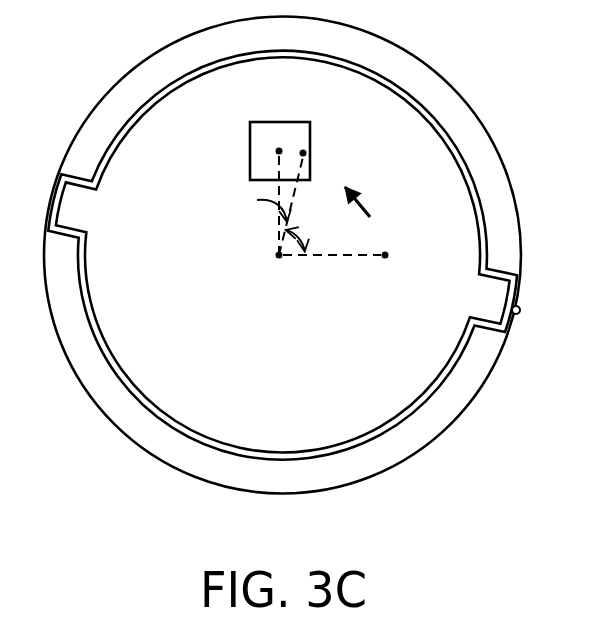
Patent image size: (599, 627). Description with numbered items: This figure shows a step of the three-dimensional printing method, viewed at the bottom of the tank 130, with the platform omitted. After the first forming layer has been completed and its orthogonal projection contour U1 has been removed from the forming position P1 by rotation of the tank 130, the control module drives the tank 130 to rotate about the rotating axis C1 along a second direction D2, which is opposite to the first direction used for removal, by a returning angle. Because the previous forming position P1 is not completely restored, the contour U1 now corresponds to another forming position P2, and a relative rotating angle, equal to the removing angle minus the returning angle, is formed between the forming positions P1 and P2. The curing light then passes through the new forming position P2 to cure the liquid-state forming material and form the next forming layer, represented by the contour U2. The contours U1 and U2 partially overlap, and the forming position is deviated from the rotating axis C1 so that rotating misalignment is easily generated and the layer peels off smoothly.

The tank 130 is at (407, 95).
The orthogonal projection contour of first forming layer U1 is at (248, 126).
The orthogonal projection contour of second forming layer U2 is at (292, 121).
The forming position P1 is at (309, 150).
The another forming position P2 is at (277, 147).
The rotating axis C1 is at (277, 260).
The second direction D2 is at (374, 213).